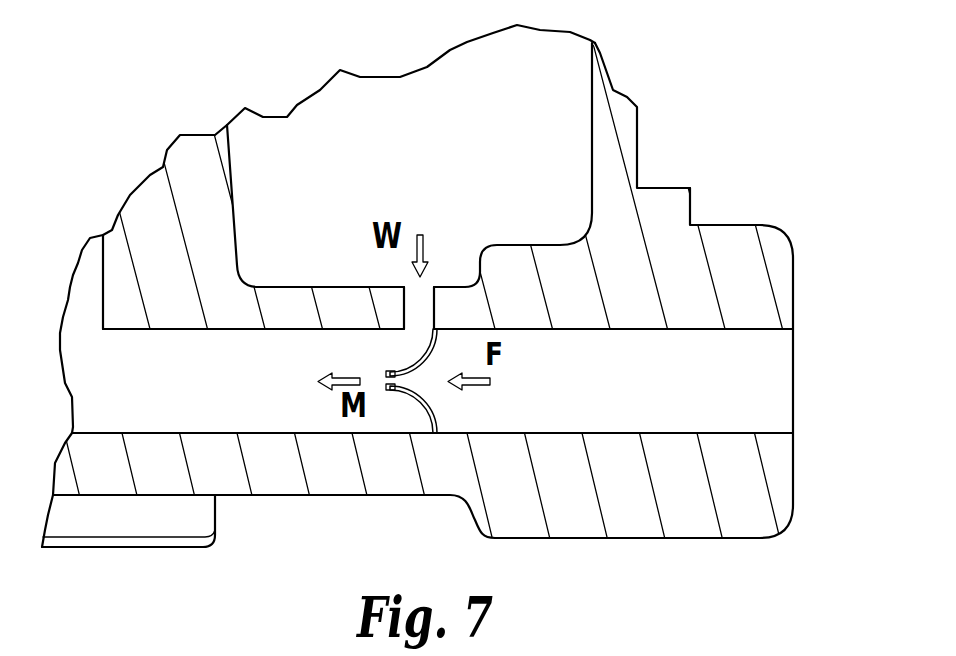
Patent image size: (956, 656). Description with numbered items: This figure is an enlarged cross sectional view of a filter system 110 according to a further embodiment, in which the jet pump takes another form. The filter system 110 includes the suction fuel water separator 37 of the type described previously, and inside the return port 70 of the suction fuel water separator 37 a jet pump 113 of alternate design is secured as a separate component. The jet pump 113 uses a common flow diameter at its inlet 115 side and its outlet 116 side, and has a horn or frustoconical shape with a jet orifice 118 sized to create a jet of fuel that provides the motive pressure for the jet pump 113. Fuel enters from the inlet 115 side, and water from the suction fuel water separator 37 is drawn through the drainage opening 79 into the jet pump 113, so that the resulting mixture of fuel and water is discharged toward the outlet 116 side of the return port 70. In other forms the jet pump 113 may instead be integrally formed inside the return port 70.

The filter system 110 is at (710, 63).
The suction fuel water separator 37 is at (615, 100).
The drainage opening 79 is at (432, 276).
The jet pump 113 is at (401, 372).
The jet orifice 118 is at (372, 368).
The outlet side 116 is at (250, 386).
The inlet side 115 is at (738, 371).
The return port 70 is at (754, 413).